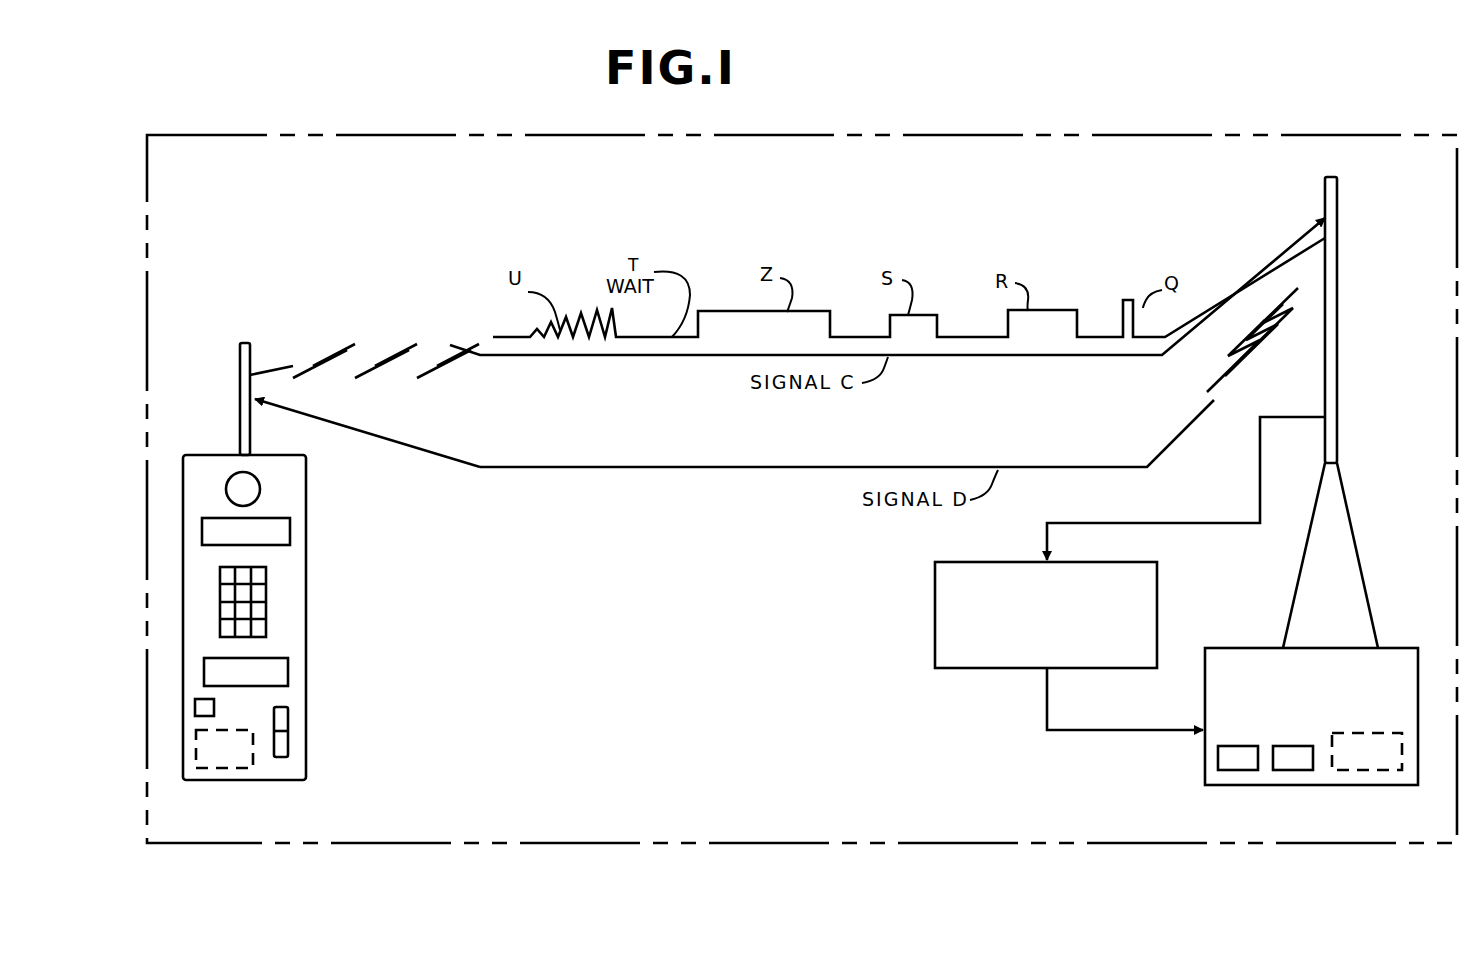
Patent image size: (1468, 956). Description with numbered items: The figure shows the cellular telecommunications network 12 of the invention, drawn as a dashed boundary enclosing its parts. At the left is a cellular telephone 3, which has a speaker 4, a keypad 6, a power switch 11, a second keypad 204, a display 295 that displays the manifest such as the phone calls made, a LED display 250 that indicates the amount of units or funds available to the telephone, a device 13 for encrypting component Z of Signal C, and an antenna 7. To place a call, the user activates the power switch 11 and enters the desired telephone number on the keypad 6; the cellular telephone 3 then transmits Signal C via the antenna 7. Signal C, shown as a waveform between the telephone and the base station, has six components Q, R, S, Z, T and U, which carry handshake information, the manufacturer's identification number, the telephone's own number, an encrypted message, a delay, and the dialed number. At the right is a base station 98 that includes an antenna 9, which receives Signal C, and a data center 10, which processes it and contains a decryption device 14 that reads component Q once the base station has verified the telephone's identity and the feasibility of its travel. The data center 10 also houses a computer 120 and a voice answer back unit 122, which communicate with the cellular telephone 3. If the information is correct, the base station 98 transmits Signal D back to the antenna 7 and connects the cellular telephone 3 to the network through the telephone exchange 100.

The cellular telecommunications network 12 is at (362, 131).
The cellular telephone 3 is at (310, 483).
The antenna 7 is at (244, 380).
The speaker 4 is at (229, 484).
The LED display 250 is at (290, 530).
The keypad 6 is at (268, 592).
The display 295 is at (288, 666).
The keypad 204 is at (195, 712).
The device for encrypting component Z 13 is at (253, 762).
The power switch 11 is at (288, 742).
The antenna 9 is at (1338, 325).
The base station 98 is at (1378, 474).
The telephone exchange 100 is at (937, 634).
The data center 10 is at (1250, 648).
The computer 120 is at (1225, 760).
The voice answer back unit 122 is at (1290, 770).
The decryption device 14 is at (1385, 772).